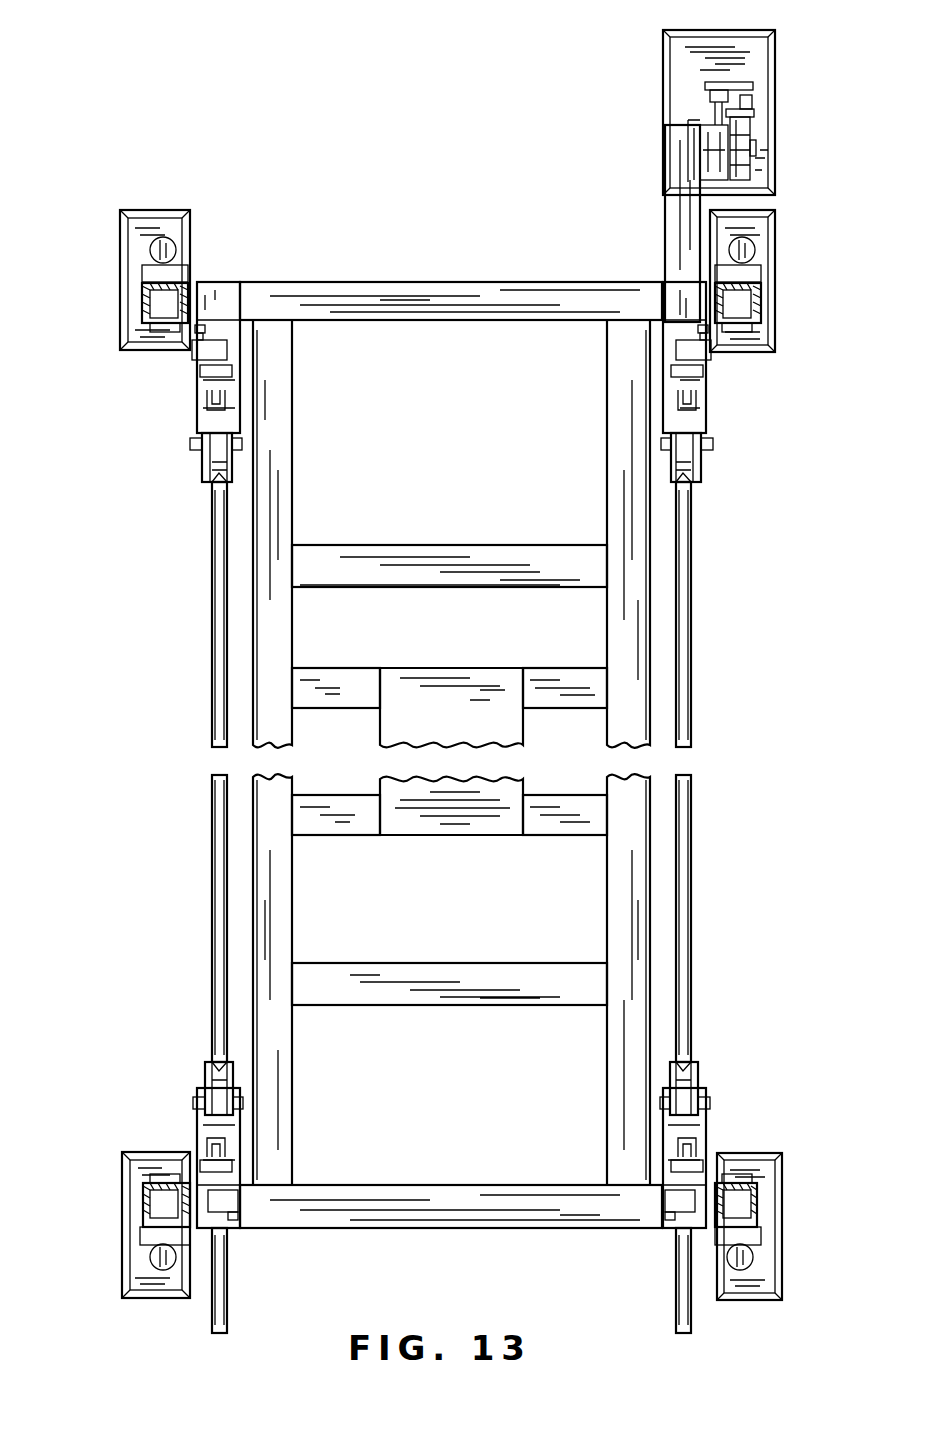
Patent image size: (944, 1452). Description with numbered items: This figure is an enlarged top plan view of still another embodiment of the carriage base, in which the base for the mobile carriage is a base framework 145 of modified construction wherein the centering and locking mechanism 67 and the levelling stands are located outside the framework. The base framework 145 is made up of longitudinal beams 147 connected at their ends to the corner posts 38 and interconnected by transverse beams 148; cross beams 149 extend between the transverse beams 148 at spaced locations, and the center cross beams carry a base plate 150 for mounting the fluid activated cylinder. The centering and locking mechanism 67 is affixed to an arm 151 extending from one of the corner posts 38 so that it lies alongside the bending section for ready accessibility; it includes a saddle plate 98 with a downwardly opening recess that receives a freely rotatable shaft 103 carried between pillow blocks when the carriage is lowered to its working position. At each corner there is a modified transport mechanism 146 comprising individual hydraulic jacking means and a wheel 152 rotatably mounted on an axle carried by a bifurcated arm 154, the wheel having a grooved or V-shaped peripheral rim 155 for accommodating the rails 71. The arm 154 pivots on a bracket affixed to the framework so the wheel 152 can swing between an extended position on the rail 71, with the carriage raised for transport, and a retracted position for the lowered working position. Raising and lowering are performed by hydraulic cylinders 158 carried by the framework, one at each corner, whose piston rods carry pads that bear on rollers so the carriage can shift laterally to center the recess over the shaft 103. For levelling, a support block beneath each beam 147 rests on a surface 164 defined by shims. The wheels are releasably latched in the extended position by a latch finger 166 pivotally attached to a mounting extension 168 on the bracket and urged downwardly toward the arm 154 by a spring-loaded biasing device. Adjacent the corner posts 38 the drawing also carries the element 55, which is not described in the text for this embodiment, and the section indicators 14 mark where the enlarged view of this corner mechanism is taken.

The section line for FIG. 14 is at (752, 15).
The corner post 38 is at (148, 303).
The liner of guide track 55 is at (196, 300).
The centering and locking mechanism 67 is at (689, 96).
The rail 71 is at (210, 680).
The saddle plate 98 is at (718, 135).
The shaft 103 is at (752, 153).
The base framework 145 is at (385, 268).
The transport mechanism 146 is at (186, 437).
The longitudinal beam 147 is at (463, 295).
The transverse beam 148 is at (290, 452).
The cross beam 149 is at (395, 555).
The base plate 150 is at (458, 709).
The arm 151 is at (672, 243).
The wheel 152 is at (210, 478).
The bifurcated arm 154 is at (702, 425).
The V-shaped peripheral rim 155 is at (689, 497).
The hydraulic cylinder 158 is at (150, 245).
The surface 164 is at (165, 225).
The latch finger 166 is at (705, 380).
The mounting extension 168 is at (683, 350).